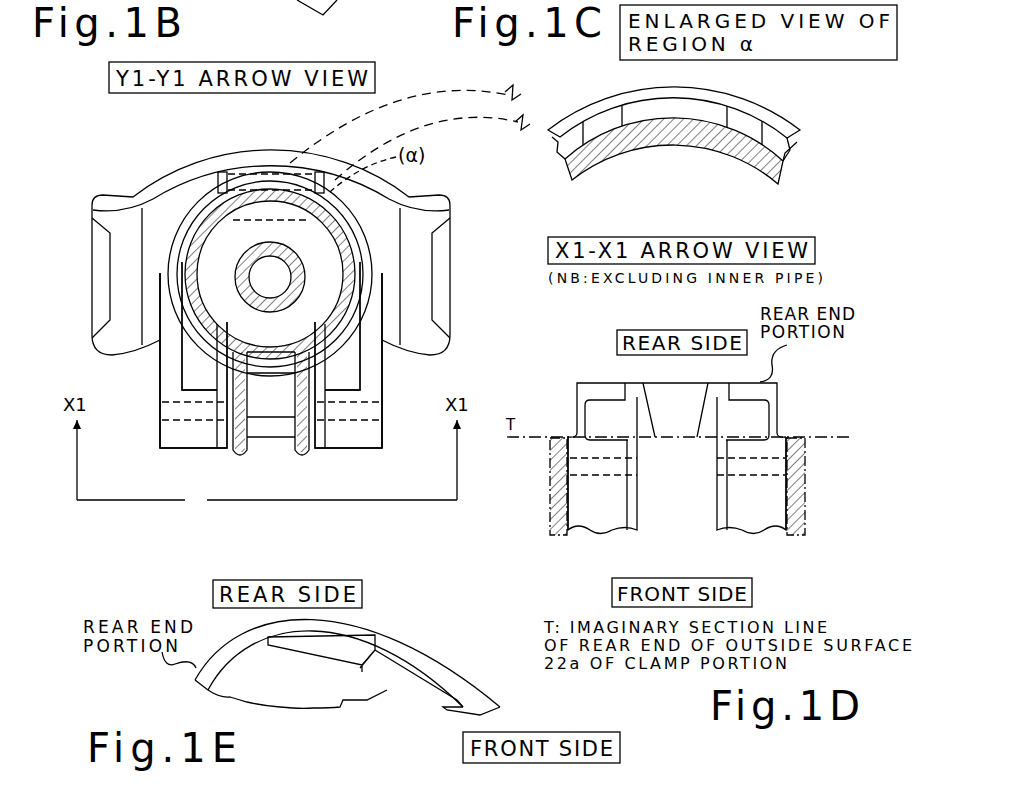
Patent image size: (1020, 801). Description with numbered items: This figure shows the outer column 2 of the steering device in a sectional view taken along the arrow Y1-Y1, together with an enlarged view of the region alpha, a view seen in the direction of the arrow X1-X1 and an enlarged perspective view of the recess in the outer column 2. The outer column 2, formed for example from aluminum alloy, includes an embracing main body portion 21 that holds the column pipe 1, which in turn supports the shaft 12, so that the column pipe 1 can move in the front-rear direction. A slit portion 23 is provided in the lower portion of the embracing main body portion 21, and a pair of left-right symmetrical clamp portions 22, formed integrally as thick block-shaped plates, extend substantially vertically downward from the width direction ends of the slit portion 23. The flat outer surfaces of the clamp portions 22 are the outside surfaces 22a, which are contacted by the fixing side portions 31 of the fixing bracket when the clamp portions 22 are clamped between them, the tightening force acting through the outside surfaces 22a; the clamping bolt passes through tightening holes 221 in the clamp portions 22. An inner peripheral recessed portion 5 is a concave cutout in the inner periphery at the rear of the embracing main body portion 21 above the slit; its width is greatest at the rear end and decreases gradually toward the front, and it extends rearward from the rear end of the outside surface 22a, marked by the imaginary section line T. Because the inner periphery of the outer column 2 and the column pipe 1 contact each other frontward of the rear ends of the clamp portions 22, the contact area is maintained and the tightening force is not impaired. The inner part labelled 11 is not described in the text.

In FIG. 1B, the column pipe 1 is at (196, 310).
In FIG. 1C, the column pipe 1 is at (563, 171).
In FIG. 1B, the outer column 2 is at (176, 180).
In FIG. 1C, the outer column 2 is at (769, 108).
In FIG. 1E, the outer column 2 is at (236, 642).
In FIG. 1B, the inner peripheral recessed portion 5 is at (258, 181).
In FIG. 1C, the inner peripheral recessed portion 5 is at (655, 110).
In FIG. 1D, the inner peripheral recessed portion 5 is at (671, 398).
In FIG. 1E, the inner peripheral recessed portion 5 is at (340, 646).
In FIG. 1B, the clamp inner portion 11 is at (310, 402).
In FIG. 1B, the shaft 12 is at (260, 252).
In FIG. 1B, the embracing main body portion 21 is at (405, 232).
In FIG. 1C, the embracing main body portion 21 is at (787, 150).
In FIG. 1D, the embracing main body portion 21 is at (580, 407).
In FIG. 1E, the embracing main body portion 21 is at (460, 680).
In FIG. 1B, the clamp portions 22 is at (190, 438).
In FIG. 1D, the clamp portions 22 is at (640, 512).
In FIG. 1B, the outside surfaces 22a is at (160, 436).
In FIG. 1D, the outside surfaces 22a is at (563, 497).
In FIG. 1B, the slit portion 23 is at (280, 336).
In FIG. 1D, the fixing side portions 31 is at (562, 533).
In FIG. 1B, the tightening holes 221 is at (160, 417).
In FIG. 1D, the tightening holes 221 is at (603, 478).